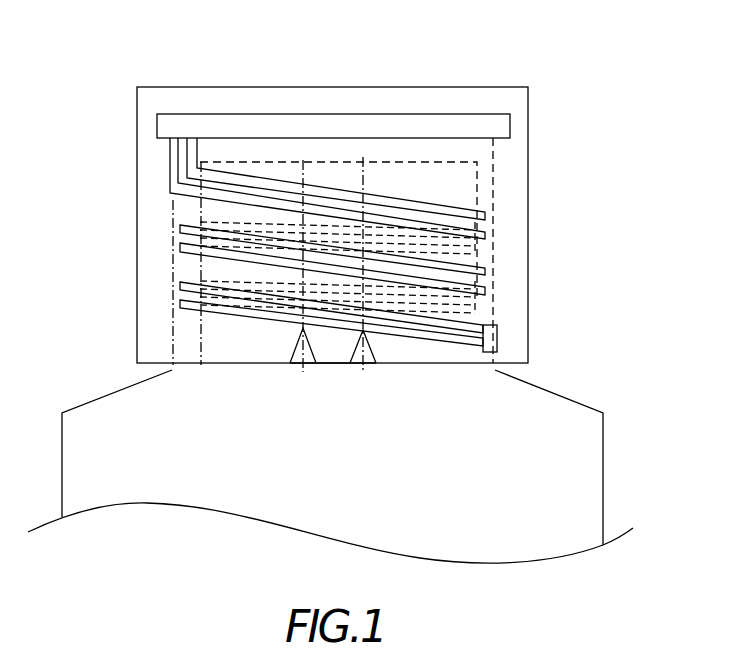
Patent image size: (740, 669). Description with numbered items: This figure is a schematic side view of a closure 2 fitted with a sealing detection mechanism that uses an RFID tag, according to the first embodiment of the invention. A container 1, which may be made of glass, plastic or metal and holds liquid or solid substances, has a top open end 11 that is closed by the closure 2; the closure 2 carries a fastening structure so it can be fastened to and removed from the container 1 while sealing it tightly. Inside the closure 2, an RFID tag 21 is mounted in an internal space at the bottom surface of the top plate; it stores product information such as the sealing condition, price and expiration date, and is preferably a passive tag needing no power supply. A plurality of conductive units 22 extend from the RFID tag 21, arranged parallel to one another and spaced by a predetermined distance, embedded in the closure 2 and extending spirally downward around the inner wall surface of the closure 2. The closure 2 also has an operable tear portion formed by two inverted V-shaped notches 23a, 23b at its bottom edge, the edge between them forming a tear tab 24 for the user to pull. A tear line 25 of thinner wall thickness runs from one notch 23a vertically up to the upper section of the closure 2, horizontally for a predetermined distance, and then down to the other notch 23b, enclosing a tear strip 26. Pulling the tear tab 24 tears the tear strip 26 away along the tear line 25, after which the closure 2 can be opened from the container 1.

The container 1 is at (603, 475).
The closure 2 is at (210, 88).
The top open end 11 is at (456, 160).
The RFID tag 21 is at (163, 128).
The conductive units 22 is at (173, 172).
The V-shaped notch 23a is at (293, 368).
The V-shaped notch 23b is at (372, 368).
The tear tab 24 is at (330, 368).
The tear line 25 is at (303, 156).
The tear strip 26 is at (363, 157).